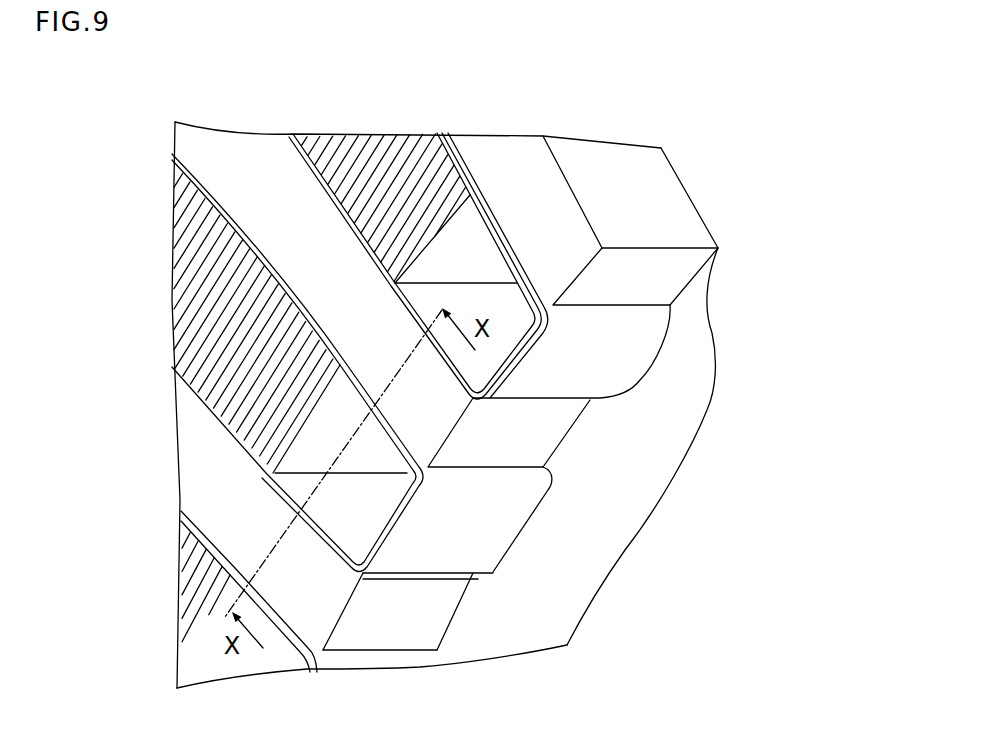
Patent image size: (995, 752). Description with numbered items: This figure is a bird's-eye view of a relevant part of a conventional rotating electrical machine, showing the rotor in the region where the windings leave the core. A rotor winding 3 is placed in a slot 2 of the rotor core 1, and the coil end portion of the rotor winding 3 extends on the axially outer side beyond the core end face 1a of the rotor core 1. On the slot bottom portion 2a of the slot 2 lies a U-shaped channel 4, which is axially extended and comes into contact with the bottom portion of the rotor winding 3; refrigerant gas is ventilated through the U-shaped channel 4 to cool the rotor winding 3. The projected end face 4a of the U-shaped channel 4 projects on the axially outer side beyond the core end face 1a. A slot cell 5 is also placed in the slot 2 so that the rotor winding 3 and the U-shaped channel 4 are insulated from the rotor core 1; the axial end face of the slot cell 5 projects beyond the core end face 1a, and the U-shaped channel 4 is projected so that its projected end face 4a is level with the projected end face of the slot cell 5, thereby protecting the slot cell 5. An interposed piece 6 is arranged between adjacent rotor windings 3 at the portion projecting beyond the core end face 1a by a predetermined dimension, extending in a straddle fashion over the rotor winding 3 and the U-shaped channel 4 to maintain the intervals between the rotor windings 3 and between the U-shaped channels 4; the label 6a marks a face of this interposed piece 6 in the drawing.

The rotor core 1 is at (484, 405).
The core end face 1a is at (718, 396).
The slot 2 is at (559, 408).
The slot bottom portion 2a is at (569, 404).
The rotor winding 3 is at (265, 357).
The U-shaped channel 4 is at (511, 431).
The projected end face 4a is at (507, 423).
The slot cell 5 is at (582, 509).
The interposed piece 6 is at (541, 410).
The block front face 6a is at (552, 445).